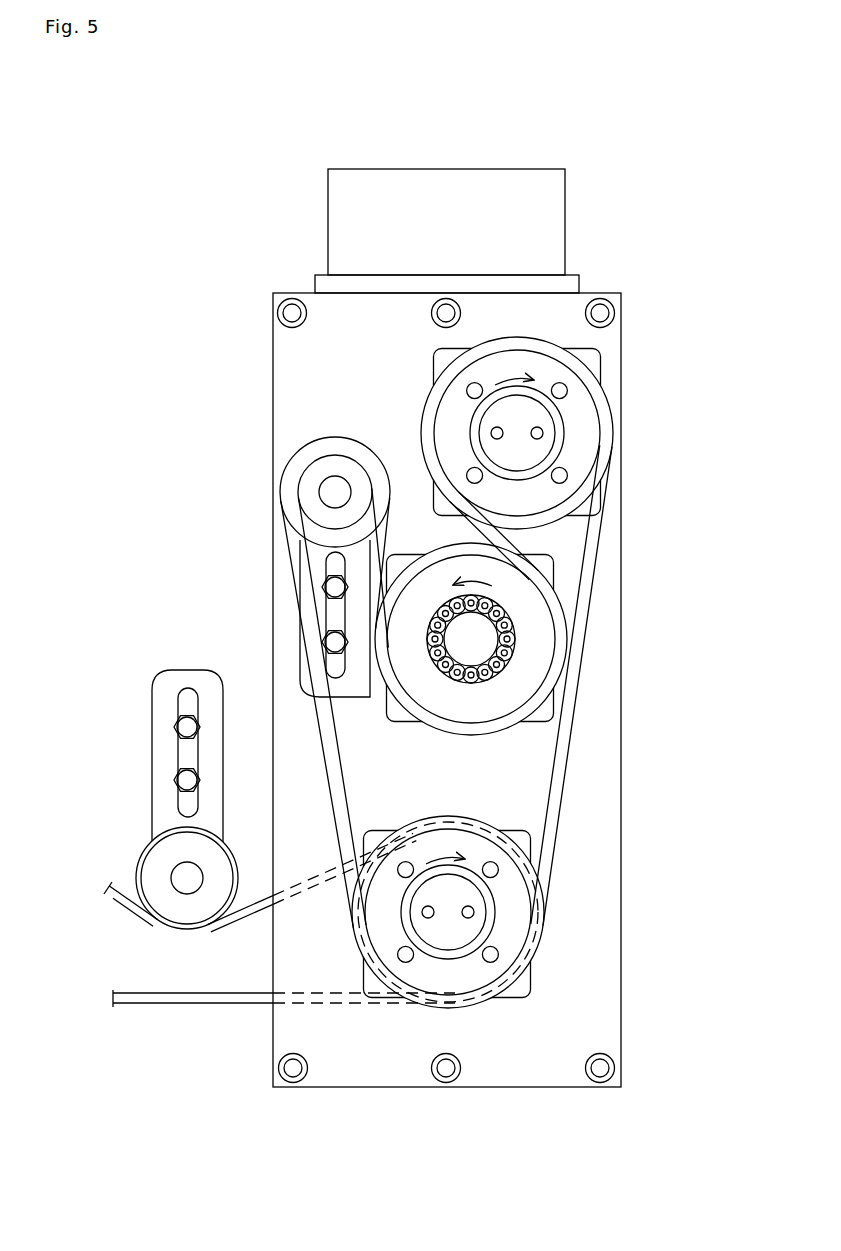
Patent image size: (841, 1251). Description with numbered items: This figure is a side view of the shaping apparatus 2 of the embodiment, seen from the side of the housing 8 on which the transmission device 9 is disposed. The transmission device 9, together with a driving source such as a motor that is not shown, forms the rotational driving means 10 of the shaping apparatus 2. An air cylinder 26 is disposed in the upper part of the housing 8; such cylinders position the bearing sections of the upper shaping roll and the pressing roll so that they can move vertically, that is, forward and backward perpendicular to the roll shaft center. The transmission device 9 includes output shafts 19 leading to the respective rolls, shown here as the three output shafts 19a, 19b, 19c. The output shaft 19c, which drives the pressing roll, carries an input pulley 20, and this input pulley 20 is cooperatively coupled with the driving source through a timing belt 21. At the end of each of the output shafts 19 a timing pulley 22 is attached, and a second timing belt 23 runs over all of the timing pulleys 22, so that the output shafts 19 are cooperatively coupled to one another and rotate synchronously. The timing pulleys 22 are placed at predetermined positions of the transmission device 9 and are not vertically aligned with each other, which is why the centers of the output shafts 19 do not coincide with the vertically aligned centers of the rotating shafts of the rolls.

The shaping apparatus 2 is at (209, 248).
The housing 8 is at (292, 380).
The transmission device 9 is at (613, 345).
The rotational driving means 10 is at (418, 685).
The output shafts 19 is at (542, 672).
The output shaft 19a is at (530, 418).
The output shaft 19b is at (495, 626).
The output shaft 19c is at (453, 893).
The input pulley 20 is at (432, 1005).
The timing belt 21 is at (174, 1005).
The timing pulley 22 is at (585, 455).
The second timing belt 23 is at (597, 552).
The air cylinder 26 is at (338, 214).